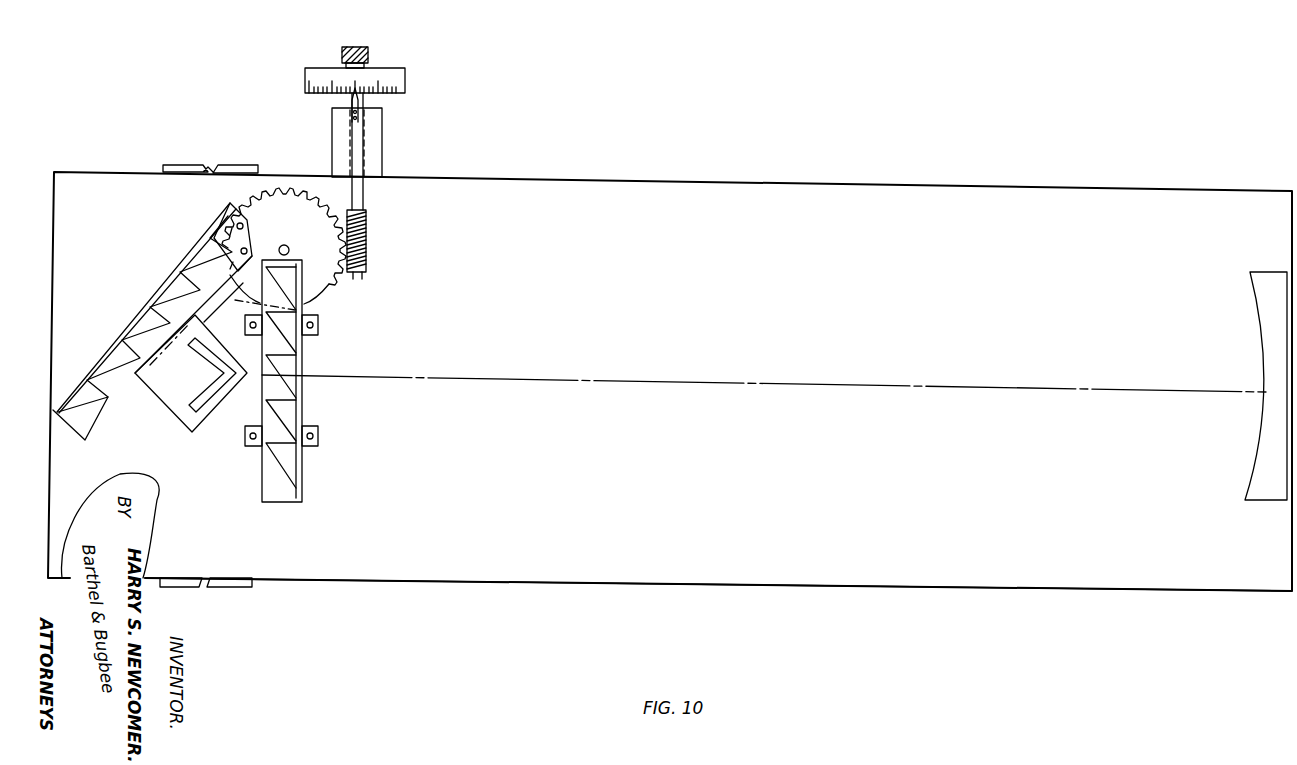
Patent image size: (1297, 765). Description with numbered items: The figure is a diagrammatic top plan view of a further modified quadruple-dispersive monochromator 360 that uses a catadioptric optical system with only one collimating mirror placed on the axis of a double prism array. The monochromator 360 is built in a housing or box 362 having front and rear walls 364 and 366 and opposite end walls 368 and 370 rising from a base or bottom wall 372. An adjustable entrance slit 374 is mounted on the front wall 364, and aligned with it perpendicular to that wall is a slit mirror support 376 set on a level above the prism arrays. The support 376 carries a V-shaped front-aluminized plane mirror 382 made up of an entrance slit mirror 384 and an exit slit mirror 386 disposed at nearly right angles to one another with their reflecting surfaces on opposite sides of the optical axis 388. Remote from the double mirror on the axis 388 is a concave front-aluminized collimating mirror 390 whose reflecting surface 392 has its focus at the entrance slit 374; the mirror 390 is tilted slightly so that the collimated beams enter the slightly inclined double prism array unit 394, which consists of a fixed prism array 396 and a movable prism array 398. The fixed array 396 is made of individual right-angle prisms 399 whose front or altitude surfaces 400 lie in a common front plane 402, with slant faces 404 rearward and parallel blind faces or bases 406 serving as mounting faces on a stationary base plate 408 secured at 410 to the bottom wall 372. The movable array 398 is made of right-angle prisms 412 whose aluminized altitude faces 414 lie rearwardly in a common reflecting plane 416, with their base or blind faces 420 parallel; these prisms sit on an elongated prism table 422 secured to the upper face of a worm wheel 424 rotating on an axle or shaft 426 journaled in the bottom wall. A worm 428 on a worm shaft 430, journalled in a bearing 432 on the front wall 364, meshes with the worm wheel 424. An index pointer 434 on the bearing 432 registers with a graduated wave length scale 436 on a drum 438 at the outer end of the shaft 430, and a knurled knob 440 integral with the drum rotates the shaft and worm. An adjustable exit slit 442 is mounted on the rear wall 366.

The monochromator 360 is at (297, 175).
The housing or box 362 is at (620, 180).
The front wall 364 is at (783, 185).
The rear wall 366 is at (655, 590).
The end wall 368 is at (1292, 228).
The end wall 370 is at (54, 218).
The base or bottom wall 372 is at (960, 188).
The adjustable entrance slit 374 is at (213, 165).
The slit mirror support 376 is at (178, 415).
The V-shaped front-aluminized plane mirror 382 is at (232, 370).
The entrance slit mirror 384 is at (212, 367).
The exit slit mirror 386 is at (214, 391).
The optical axis 388 is at (610, 380).
The concave front-aluminized collimating mirror 390 is at (1250, 284).
The reflecting surface 392 is at (1262, 341).
The double prism array unit 394 is at (300, 365).
The fixed prism array 396 is at (300, 408).
The movable prism array 398 is at (142, 312).
The fixed prisms 399 is at (290, 458).
The front or altitude surfaces 400 is at (302, 462).
The common front plane 402 is at (300, 392).
The slant faces 404 is at (268, 498).
The blind faces or bases 406 is at (262, 440).
The stationary base bar or plate 408 is at (292, 498).
The securing means 410 is at (318, 324).
The movable prisms 412 is at (84, 393).
The altitude faces 414 is at (204, 234).
The common reflecting plane 416 is at (166, 275).
The base or blind faces 420 is at (224, 210).
The elongated plate or prism table 422 is at (72, 442).
The worm wheel 424 is at (333, 276).
The axle or shaft 426 is at (289, 246).
The worm 428 is at (366, 238).
The worm shaft 430 is at (365, 198).
The bearing 432 is at (382, 147).
The index pointer 434 is at (350, 104).
The graduated wave length scale 436 is at (400, 95).
The drum 438 is at (405, 80).
The knurled knob 440 is at (368, 53).
The adjustable exit slit 442 is at (215, 577).